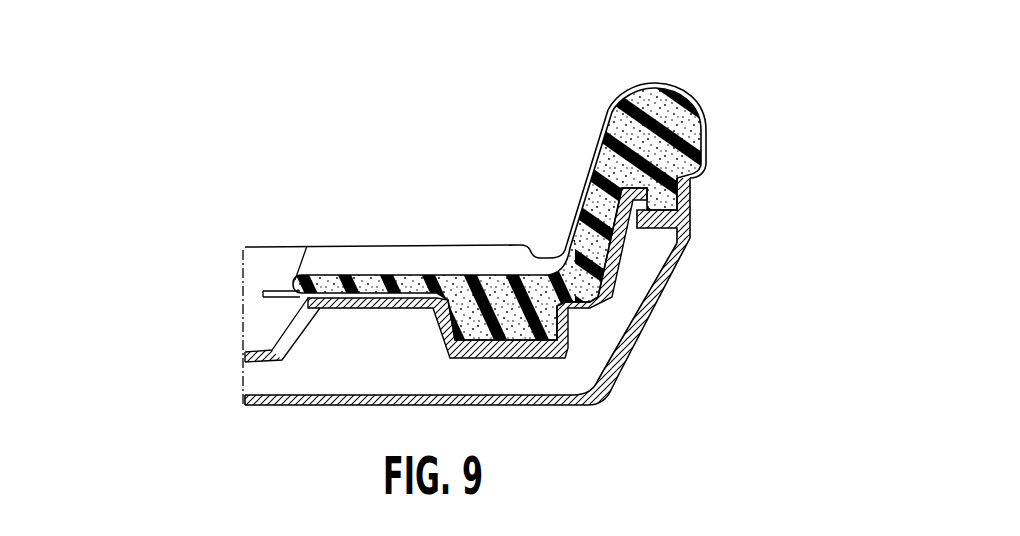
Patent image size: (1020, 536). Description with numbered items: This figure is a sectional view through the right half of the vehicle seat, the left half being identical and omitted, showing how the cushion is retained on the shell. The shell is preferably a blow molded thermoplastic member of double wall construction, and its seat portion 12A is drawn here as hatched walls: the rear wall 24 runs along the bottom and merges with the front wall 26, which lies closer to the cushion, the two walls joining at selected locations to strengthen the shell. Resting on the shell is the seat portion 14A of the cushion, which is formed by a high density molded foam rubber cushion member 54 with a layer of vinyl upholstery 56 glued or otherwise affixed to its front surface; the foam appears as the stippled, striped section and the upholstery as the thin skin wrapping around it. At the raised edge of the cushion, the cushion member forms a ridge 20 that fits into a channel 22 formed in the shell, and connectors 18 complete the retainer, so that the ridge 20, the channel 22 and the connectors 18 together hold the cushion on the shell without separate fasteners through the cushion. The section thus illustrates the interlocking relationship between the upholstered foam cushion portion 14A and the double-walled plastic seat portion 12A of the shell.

The seat portion 12A is at (640, 347).
The seat portion 14A is at (625, 95).
The connectors 18 is at (690, 208).
The ridge 20 is at (700, 133).
The channel 22 is at (687, 237).
The rear wall 24 is at (248, 400).
The front wall 26 is at (247, 349).
The cushion member 54 is at (298, 274).
The vinyl upholstery 56 is at (580, 197).